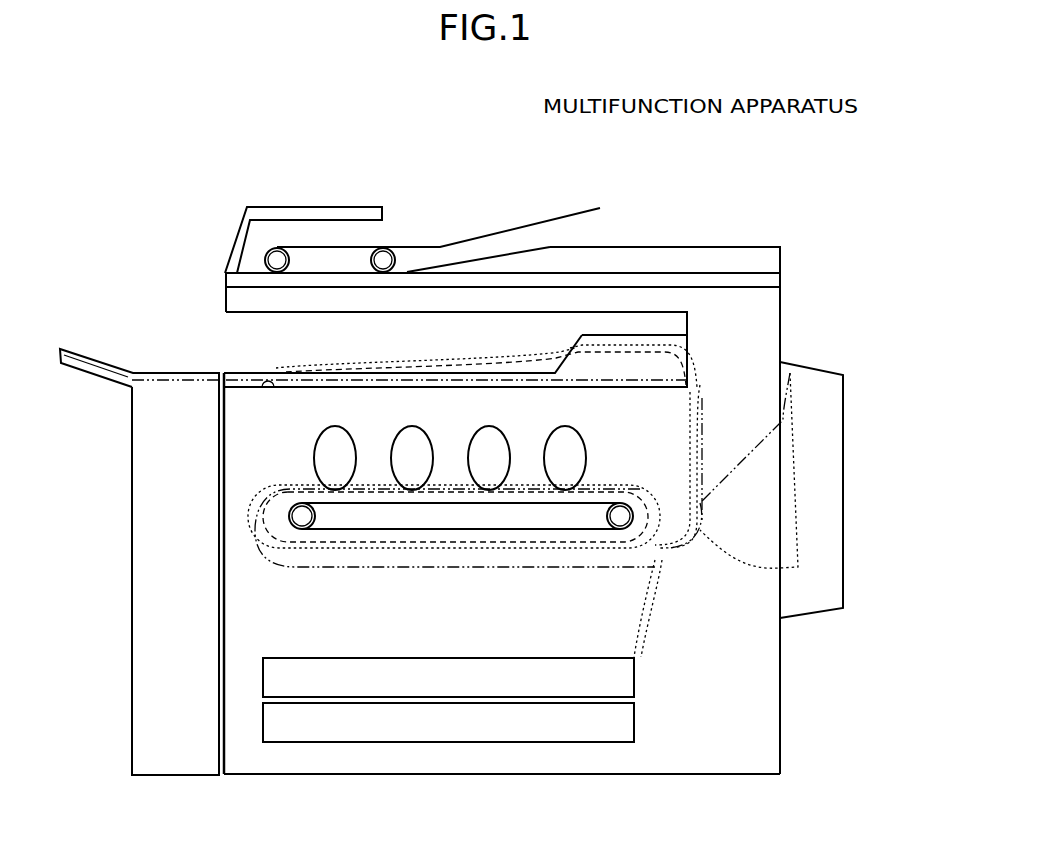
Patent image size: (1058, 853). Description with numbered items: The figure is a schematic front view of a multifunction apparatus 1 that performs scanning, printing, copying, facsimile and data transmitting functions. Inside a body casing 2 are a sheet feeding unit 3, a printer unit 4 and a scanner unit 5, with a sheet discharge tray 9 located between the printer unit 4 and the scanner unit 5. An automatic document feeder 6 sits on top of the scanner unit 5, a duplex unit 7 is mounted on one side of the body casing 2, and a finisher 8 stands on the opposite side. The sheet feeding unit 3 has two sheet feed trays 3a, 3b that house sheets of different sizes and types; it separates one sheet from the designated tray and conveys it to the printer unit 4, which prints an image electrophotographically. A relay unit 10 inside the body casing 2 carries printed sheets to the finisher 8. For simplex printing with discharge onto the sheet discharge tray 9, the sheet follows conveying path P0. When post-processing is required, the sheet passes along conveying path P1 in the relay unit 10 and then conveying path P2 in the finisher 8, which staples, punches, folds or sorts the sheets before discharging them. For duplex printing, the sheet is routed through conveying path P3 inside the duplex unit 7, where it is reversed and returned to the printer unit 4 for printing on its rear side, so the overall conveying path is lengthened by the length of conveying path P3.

The multifunction apparatus 1 is at (656, 175).
The body casing 2 is at (781, 337).
The sheet feeding unit 3 is at (766, 707).
The sheet feed tray 3a is at (490, 657).
The sheet feed tray 3b is at (483, 743).
The printer unit 4 is at (313, 579).
The scanner unit 5 is at (711, 305).
The automatic document feeder 6 is at (427, 229).
The duplex unit 7 is at (843, 490).
The finisher 8 is at (131, 475).
The sheet discharge tray 9 is at (258, 372).
The relay unit 10 is at (275, 389).
The conveying path P0 is at (700, 385).
The conveying path P1 is at (620, 388).
The conveying path P2 is at (152, 374).
The conveying path P3 is at (798, 427).